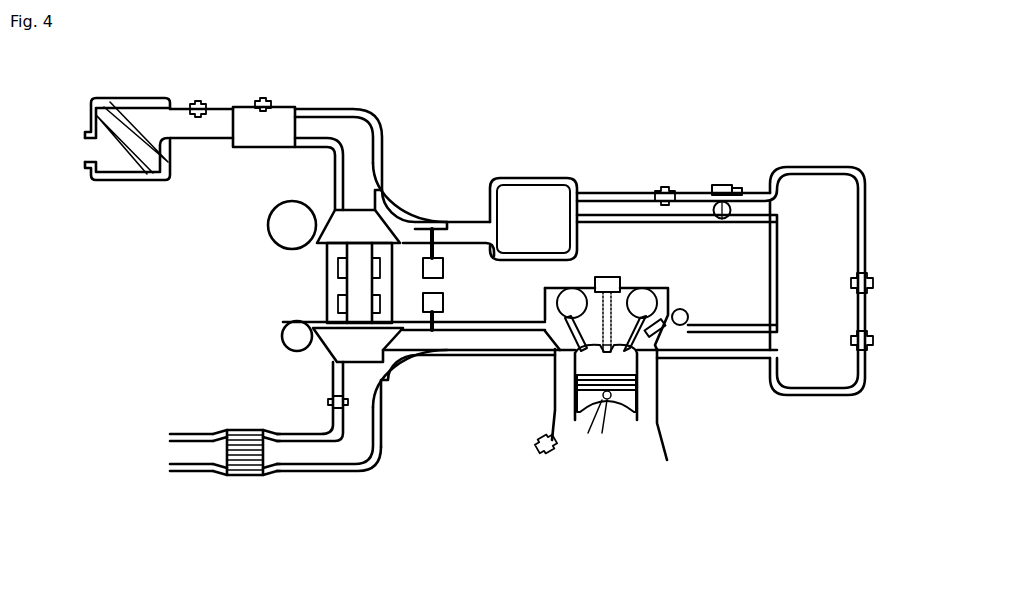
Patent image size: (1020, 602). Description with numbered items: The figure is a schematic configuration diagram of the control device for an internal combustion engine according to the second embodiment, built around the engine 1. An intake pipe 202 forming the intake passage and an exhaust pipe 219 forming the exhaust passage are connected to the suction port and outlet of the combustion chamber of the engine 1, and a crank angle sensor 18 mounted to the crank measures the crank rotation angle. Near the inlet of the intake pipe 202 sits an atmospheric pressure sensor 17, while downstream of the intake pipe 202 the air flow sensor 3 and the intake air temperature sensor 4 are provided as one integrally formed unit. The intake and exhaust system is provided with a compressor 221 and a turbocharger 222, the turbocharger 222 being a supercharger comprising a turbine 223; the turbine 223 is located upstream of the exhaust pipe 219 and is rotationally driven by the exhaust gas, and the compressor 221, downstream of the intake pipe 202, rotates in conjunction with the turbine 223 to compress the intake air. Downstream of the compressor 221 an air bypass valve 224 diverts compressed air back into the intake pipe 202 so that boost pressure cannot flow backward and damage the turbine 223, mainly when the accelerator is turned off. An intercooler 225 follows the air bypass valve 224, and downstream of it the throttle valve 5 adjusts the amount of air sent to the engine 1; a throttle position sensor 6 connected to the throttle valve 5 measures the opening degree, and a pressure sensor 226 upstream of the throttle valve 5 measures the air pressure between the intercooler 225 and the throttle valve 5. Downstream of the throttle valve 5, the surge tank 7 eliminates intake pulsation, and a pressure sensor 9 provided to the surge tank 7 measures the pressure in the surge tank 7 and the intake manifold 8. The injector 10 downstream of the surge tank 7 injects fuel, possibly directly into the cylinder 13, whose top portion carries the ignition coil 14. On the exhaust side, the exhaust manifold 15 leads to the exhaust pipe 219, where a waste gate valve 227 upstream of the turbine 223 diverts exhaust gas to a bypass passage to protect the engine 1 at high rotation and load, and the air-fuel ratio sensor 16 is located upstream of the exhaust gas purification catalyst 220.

The engine 1 is at (641, 389).
The air flow sensor 3 is at (273, 96).
The intake air temperature sensor 4 is at (883, 367).
The throttle valve 5 is at (677, 273).
The throttle position sensor 6 is at (736, 177).
The surge tank 7 is at (828, 267).
The intake manifold 8 is at (717, 377).
The pressure sensor 9 is at (877, 257).
The injector 10 is at (687, 297).
The cylinder 13 is at (562, 403).
The ignition coil 14 is at (622, 288).
The exhaust manifold 15 is at (469, 374).
The air-fuel ratio sensor 16 is at (310, 380).
The atmospheric pressure sensor 17 is at (216, 82).
The crank angle sensor 18 is at (534, 470).
The intake pipe 202 is at (166, 151).
The exhaust pipe 219 is at (227, 474).
The exhaust gas purification catalyst 220 is at (252, 479).
The compressor 221 is at (334, 203).
The turbocharger 222 is at (313, 278).
The turbine 223 is at (335, 322).
The air bypass valve 224 is at (455, 235).
The intercooler 225 is at (540, 192).
The pressure sensor 226 is at (688, 167).
The waste gate valve 227 is at (460, 338).